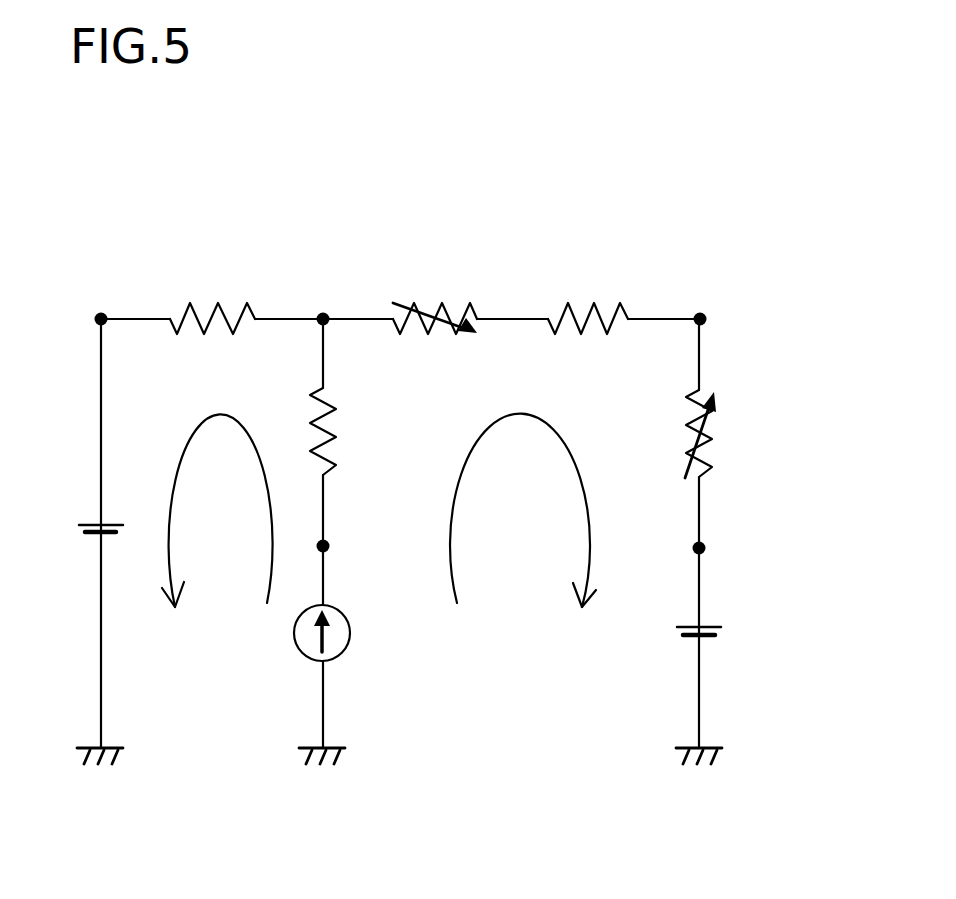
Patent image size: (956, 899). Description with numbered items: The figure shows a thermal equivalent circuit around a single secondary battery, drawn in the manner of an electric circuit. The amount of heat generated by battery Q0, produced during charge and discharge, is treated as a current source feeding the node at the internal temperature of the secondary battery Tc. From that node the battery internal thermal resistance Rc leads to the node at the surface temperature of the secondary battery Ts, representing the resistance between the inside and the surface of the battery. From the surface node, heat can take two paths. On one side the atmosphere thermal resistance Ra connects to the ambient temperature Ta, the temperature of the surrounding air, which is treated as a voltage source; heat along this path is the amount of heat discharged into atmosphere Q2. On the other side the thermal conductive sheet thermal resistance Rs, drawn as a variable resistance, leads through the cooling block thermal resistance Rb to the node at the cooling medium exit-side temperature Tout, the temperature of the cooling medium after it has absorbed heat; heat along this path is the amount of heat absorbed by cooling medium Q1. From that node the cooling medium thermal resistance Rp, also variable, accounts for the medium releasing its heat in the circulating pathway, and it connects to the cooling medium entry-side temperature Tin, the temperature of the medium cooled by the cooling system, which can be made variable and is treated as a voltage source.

The ambient temperature Ta is at (96, 313).
The atmosphere thermal resistance Ra is at (196, 311).
The surface temperature of the secondary battery Ts is at (329, 311).
The thermal conductive sheet thermal resistance Rs is at (423, 305).
The cooling block thermal resistance Rb is at (575, 309).
The cooling medium exit-side temperature Tout is at (706, 316).
The battery internal thermal resistance Rc is at (330, 434).
The internal temperature of the secondary battery Tc is at (329, 545).
The amount of heat generated by battery Q0 is at (350, 641).
The amount of heat discharged into atmosphere Q2 is at (172, 552).
The amount of heat absorbed by cooling medium Q1 is at (588, 548).
The cooling medium thermal resistance Rp is at (705, 433).
The cooling medium entry-side temperature Tin is at (706, 546).